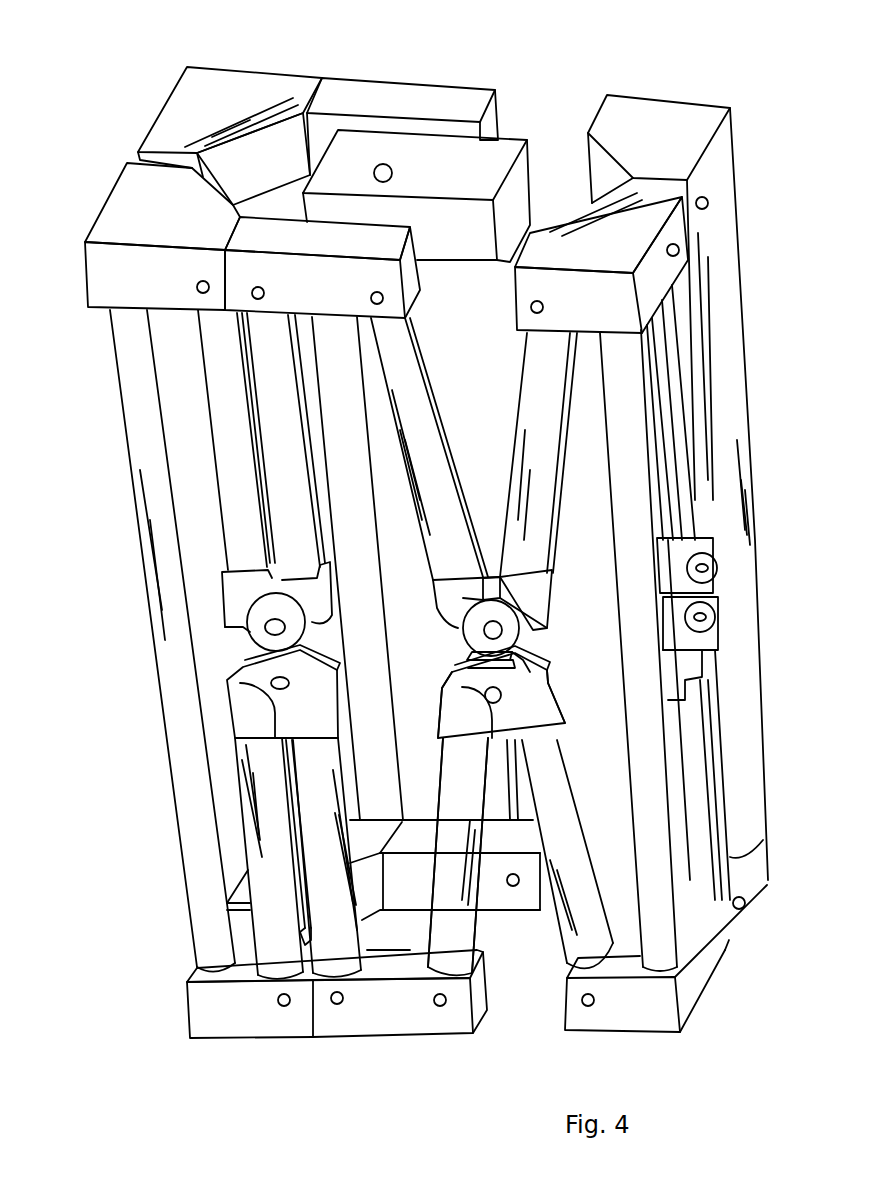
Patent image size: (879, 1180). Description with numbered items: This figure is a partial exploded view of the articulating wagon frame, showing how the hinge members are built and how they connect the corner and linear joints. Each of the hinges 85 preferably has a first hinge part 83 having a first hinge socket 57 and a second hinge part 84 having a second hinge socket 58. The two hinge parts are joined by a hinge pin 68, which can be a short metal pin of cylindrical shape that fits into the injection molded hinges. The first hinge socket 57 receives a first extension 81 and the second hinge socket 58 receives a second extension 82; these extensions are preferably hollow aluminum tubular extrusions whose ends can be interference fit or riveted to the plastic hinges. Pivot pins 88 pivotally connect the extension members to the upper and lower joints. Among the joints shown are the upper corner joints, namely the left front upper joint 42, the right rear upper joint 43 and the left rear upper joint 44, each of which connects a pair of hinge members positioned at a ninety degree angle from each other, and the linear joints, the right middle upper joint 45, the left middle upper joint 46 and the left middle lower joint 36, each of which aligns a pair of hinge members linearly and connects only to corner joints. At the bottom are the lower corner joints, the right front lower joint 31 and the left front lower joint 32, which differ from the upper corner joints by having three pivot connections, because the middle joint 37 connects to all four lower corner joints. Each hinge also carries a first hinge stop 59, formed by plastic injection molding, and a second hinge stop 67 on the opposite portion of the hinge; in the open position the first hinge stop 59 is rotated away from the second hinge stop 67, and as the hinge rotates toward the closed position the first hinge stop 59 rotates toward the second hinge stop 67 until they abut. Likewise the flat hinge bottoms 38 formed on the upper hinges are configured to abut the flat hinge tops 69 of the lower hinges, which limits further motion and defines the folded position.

The right front lower joint 31 is at (757, 895).
The left front lower joint 32 is at (708, 980).
The left middle lower joint 36 is at (375, 1010).
The middle joint 37 is at (447, 223).
The flat hinge bottom 38 is at (510, 618).
The left front upper joint 42 is at (522, 303).
The right rear upper joint 43 is at (218, 88).
The left rear upper joint 44 is at (138, 210).
The right middle upper joint 45 is at (398, 107).
The left middle upper joint 46 is at (325, 238).
The first hinge socket 57 is at (545, 750).
The second hinge socket 58 is at (470, 760).
The first hinge stop 59 is at (317, 620).
The second hinge stop 67 is at (243, 618).
The hinge pin 68 is at (492, 700).
The flat hinge top 69 is at (510, 655).
The first extension 81 is at (540, 425).
The second extension 82 is at (425, 420).
The first hinge part 83 is at (555, 575).
The second hinge part 84 is at (490, 562).
The hinge 85 is at (443, 605).
The pivot pin 88 is at (200, 287).